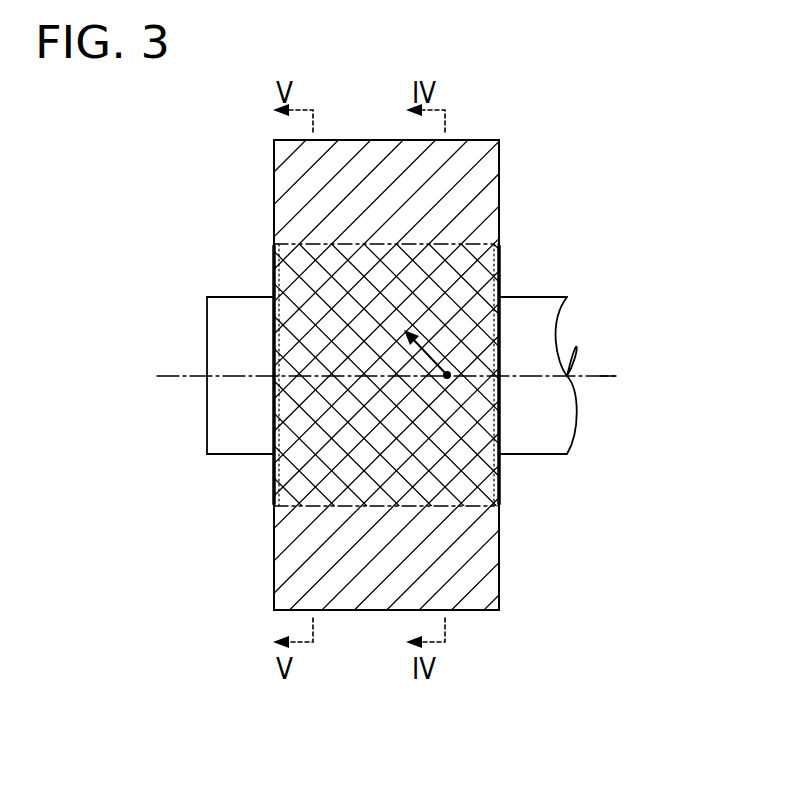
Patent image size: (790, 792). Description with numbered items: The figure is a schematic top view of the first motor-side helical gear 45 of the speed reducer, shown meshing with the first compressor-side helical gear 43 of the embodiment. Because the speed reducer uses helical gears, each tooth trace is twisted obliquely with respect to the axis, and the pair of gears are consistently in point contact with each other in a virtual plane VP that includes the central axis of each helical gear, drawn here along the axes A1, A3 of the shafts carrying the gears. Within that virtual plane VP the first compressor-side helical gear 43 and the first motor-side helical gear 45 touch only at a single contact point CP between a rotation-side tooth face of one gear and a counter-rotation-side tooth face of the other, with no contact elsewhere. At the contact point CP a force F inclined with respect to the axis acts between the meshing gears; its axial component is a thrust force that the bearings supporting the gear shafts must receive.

The first compressor-side helical gear 43 is at (318, 245).
The first motor-side helical gear 45 is at (368, 612).
The axis of rotation A1 is at (362, 371).
The axis of rotation A3 is at (172, 373).
The contact point CP is at (447, 380).
The force F is at (497, 292).
The virtual plane VP is at (604, 375).